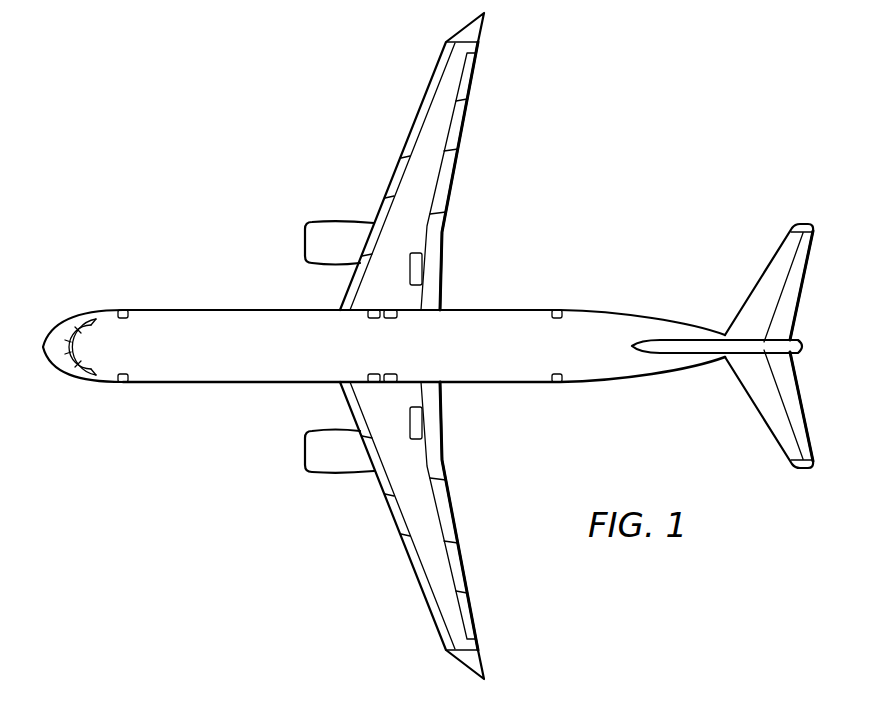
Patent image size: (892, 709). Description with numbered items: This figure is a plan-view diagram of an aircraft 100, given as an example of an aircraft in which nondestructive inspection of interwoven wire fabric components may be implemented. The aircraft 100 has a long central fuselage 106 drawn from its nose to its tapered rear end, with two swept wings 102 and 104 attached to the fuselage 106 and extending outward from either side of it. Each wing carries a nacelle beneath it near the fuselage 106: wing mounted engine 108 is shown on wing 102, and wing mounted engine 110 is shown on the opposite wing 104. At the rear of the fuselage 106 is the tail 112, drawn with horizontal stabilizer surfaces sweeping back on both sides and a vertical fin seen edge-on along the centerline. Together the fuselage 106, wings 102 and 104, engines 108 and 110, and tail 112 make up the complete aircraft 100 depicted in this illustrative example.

The aircraft 100 is at (292, 132).
The wing 102 is at (394, 169).
The wing 104 is at (396, 518).
The fuselage 106 is at (216, 310).
The wing mounted engine 108 is at (305, 237).
The wing mounted engine 110 is at (305, 455).
The tail 112 is at (800, 298).